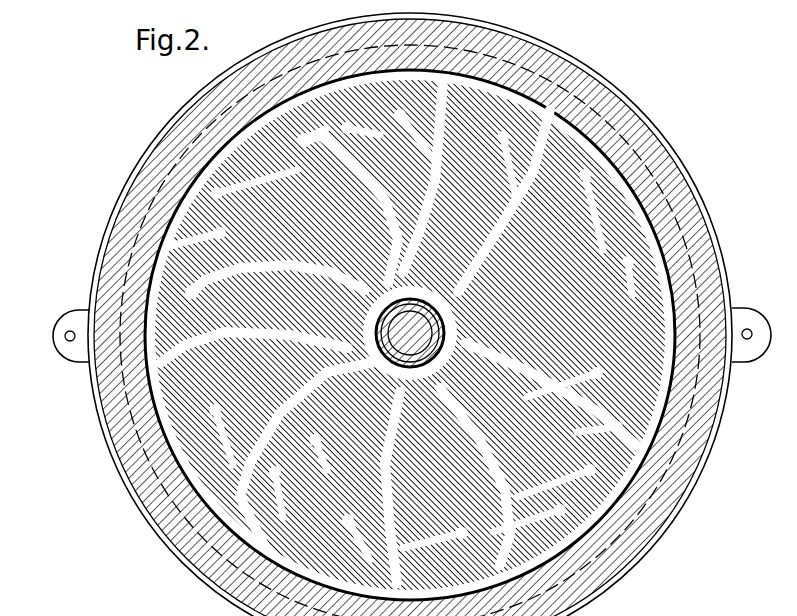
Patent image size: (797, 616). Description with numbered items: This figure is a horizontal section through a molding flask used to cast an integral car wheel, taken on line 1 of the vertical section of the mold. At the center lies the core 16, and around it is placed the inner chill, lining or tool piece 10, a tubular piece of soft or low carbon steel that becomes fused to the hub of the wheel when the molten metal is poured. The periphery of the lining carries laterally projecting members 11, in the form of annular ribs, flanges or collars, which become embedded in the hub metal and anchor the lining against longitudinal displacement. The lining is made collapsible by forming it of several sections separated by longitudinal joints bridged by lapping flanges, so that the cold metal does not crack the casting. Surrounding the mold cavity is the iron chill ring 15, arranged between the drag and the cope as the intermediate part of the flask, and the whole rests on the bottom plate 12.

The casing 1 is at (399, 314).
The inner chill, lining or tool piece 10 is at (368, 338).
The laterally projecting members 11 is at (416, 304).
The bottom plate 12 is at (143, 466).
The chill ring 15 is at (688, 190).
The core 16 is at (395, 362).